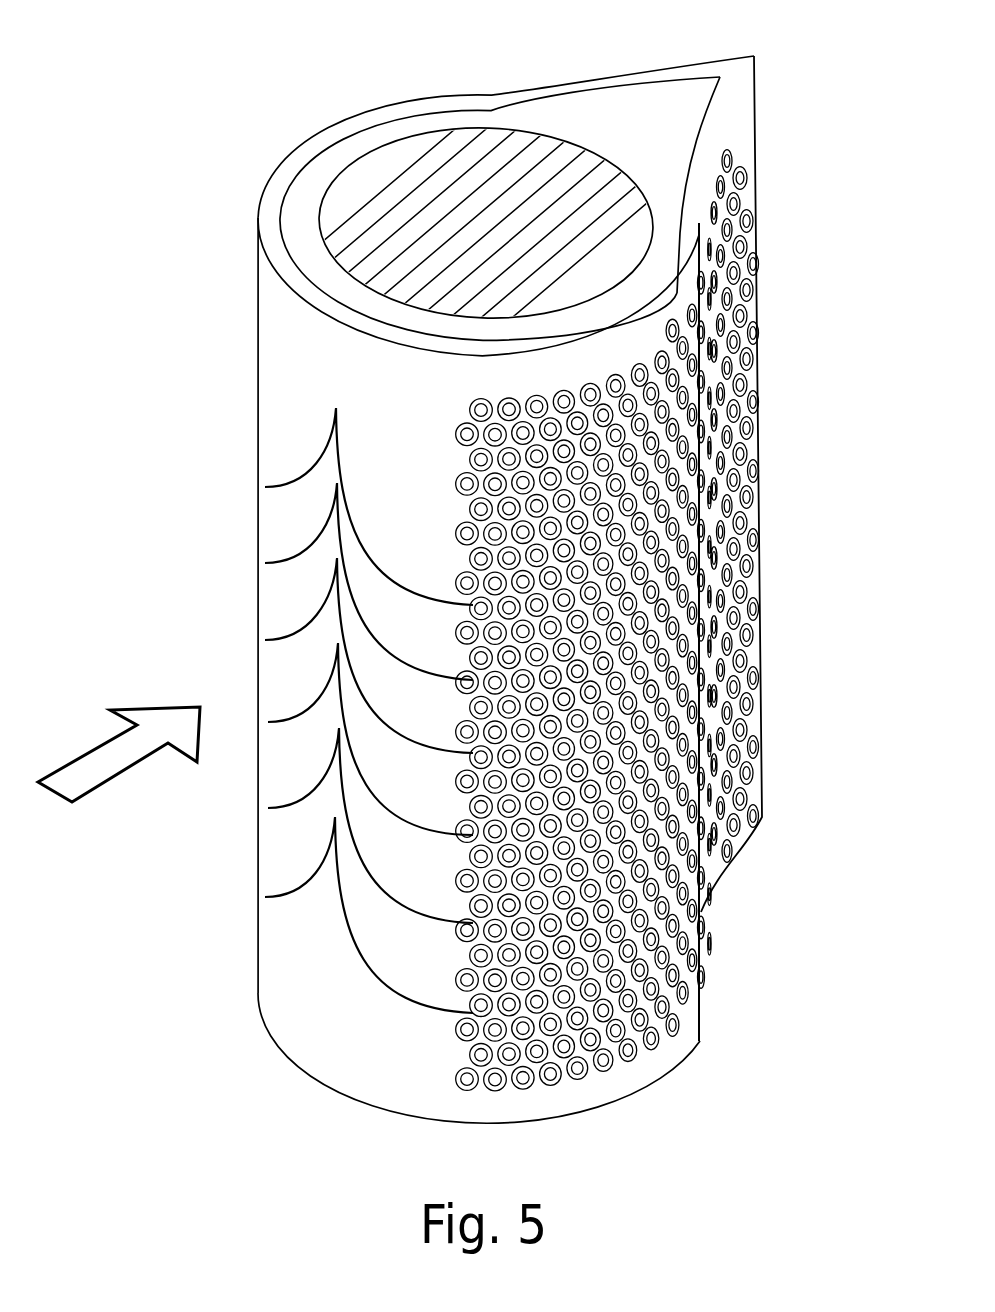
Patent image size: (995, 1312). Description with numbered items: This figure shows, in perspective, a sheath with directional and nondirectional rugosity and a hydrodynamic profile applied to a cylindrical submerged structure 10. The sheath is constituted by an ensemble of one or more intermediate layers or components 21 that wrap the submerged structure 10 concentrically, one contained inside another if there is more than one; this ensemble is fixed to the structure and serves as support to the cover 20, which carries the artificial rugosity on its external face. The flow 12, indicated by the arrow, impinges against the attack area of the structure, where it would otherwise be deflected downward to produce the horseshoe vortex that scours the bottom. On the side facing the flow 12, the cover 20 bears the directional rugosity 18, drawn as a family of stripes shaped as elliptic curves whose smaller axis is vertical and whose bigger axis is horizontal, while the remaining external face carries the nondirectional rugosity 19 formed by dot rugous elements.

The submerged structure 10 is at (380, 192).
The flow 12 is at (78, 755).
The directional rugosity 18 is at (303, 882).
The nondirectional rugosity 19 is at (733, 630).
The cover 20 is at (713, 72).
The intermediate layers or components 21 is at (537, 105).